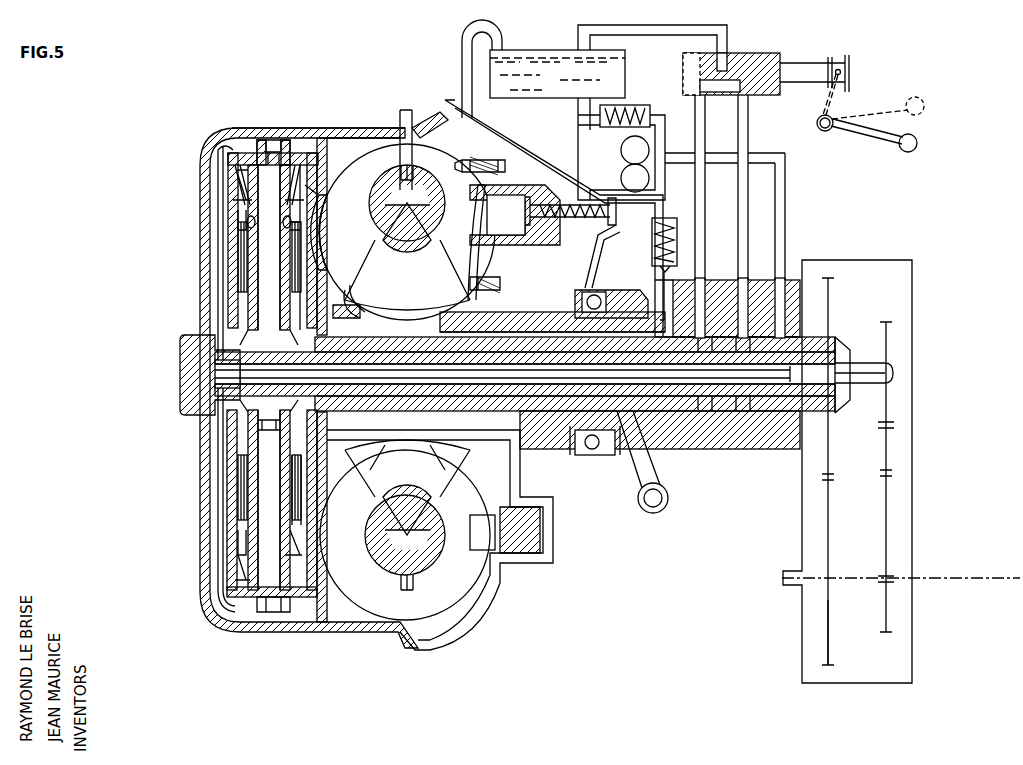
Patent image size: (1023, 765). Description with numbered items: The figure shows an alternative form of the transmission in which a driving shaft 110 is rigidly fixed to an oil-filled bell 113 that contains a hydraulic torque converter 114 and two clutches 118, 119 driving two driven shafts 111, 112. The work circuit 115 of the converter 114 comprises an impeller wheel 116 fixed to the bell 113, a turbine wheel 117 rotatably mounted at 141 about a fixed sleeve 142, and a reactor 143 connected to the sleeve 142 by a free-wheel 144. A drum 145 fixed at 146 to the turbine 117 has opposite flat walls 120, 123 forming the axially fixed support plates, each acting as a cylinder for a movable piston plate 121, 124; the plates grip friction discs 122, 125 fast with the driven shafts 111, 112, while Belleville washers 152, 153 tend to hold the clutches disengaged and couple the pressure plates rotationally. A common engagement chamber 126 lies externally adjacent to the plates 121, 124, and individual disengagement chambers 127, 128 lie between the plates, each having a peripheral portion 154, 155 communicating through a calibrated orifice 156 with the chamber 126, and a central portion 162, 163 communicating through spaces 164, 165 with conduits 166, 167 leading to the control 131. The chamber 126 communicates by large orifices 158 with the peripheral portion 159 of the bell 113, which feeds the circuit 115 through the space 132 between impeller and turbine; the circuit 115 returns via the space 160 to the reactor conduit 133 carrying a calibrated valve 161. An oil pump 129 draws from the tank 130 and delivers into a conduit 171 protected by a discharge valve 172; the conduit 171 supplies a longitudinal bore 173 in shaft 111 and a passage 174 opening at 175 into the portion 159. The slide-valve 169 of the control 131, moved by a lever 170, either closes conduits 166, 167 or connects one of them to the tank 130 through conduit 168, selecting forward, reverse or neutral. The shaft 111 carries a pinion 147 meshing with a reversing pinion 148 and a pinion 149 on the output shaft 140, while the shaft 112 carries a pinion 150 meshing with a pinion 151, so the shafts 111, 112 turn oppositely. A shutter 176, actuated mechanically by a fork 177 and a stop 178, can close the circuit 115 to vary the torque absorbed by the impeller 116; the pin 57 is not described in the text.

The pin 57 is at (302, 226).
The driving shaft 110 is at (188, 375).
The first driven shaft 111 is at (532, 412).
The second driven shaft 112 is at (562, 411).
The bell 113 is at (327, 128).
The hydraulic torque converter 114 is at (438, 126).
The work circuit 115 is at (452, 175).
The impeller wheel 116 is at (468, 239).
The turbine wheel 117 is at (360, 246).
The first clutch 118 is at (240, 285).
The second clutch 119 is at (290, 288).
The axially fixed plate 120 is at (228, 505).
The axially movable plate 121 is at (240, 538).
The friction disc 122 is at (240, 470).
The axially fixed plate 123 is at (315, 548).
The axially movable plate 124 is at (300, 578).
The friction disc 125 is at (303, 503).
The common engagement chamber 126 is at (268, 244).
The first individual disengagement chamber 127 is at (240, 208).
The second individual disengagement chamber 128 is at (320, 198).
The oil pump 129 is at (648, 176).
The tank 130 is at (562, 100).
The control 131 is at (780, 62).
The oil outlet 132 is at (406, 112).
The oil-return 133 is at (477, 330).
The output shaft 140 is at (980, 578).
The rotatable mounting 141 is at (380, 480).
The fixed sleeve 142 is at (380, 440).
The reactor 143 is at (420, 271).
The free-wheel 144 is at (420, 445).
The drum 145 is at (250, 150).
The fixing of drum to turbine 146 is at (333, 300).
The pinion 147 is at (890, 340).
The reversing pinion 148 is at (890, 458).
The pinion 149 is at (890, 560).
The pinion 150 is at (828, 302).
The pinion 151 is at (826, 535).
The Belleville washer 152 is at (240, 190).
The Belleville washer 153 is at (302, 195).
The peripheral portion 154 is at (242, 160).
The peripheral portion 155 is at (302, 190).
The calibrated orifice 156 is at (247, 222).
The large orifices 158 is at (270, 140).
The peripheral portion of the bell 159 is at (370, 138).
The space 160 is at (347, 283).
The calibrated valve 161 is at (652, 248).
The central portion 162 is at (250, 330).
The central portion 163 is at (290, 412).
The space 164 is at (552, 345).
The space 165 is at (525, 340).
The conduit 166 is at (752, 225).
The conduit 167 is at (714, 225).
The conduit 168 is at (578, 30).
The slide-valve 169 is at (760, 95).
The lever 170 is at (873, 144).
The conduit 171 is at (790, 225).
The discharge valve 172 is at (650, 93).
The longitudinal bore 173 is at (690, 380).
The passage 174 is at (228, 275).
The opening 175 is at (205, 150).
The shutter 176 is at (518, 205).
The fork 177 is at (635, 465).
The stop 178 is at (600, 285).